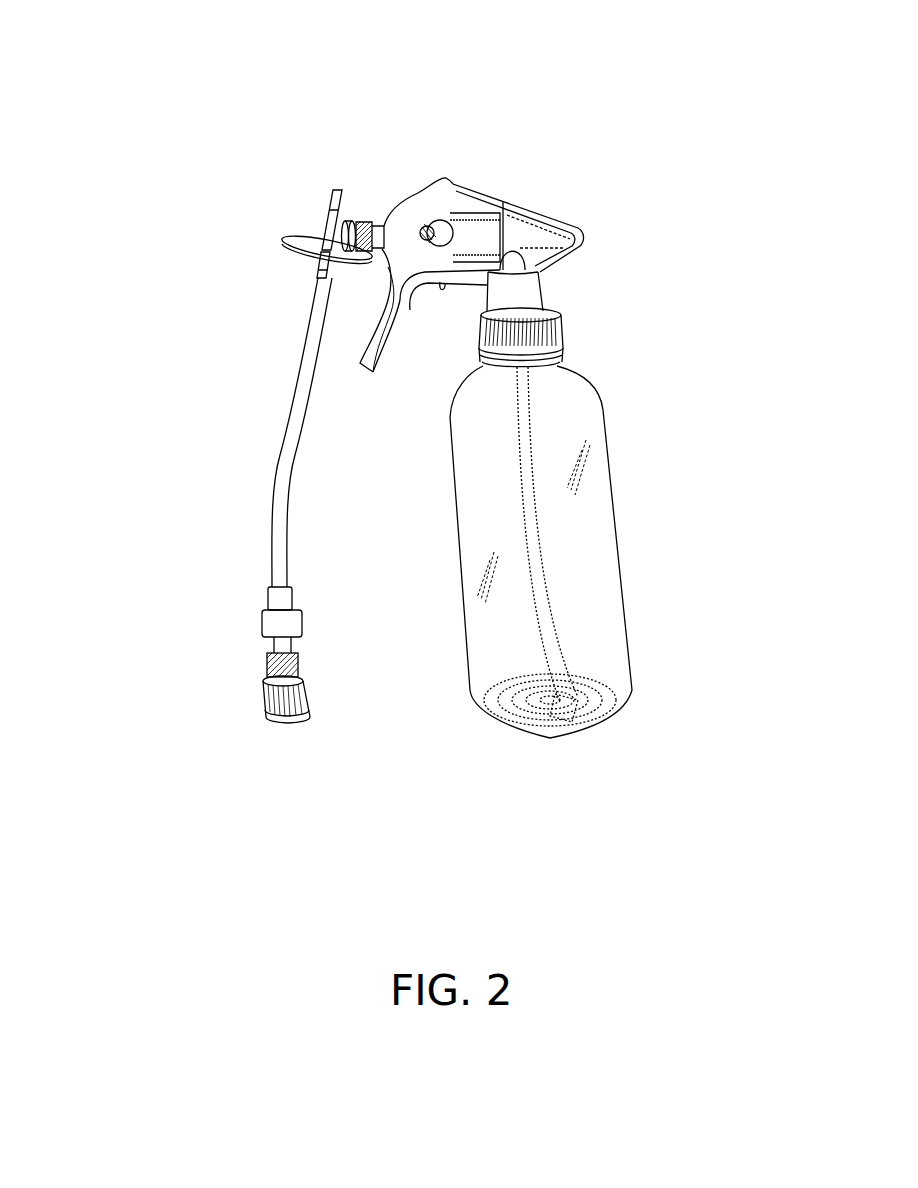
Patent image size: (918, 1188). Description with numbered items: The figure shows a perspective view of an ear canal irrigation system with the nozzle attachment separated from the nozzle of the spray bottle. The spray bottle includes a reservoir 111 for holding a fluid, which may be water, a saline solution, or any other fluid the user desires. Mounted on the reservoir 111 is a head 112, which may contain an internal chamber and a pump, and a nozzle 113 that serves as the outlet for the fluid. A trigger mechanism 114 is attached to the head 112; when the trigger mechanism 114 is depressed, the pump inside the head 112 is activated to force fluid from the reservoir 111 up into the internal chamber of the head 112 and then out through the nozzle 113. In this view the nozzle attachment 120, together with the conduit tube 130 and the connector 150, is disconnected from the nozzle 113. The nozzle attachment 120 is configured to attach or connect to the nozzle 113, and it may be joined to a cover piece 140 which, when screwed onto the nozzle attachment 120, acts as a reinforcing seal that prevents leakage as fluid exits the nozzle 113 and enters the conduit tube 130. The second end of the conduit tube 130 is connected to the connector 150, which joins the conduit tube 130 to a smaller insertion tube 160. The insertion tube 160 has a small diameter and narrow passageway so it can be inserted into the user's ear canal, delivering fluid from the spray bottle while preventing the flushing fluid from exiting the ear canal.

The reservoir 111 is at (630, 580).
The head 112 is at (518, 182).
The nozzle 113 is at (382, 207).
The trigger mechanism 114 is at (387, 370).
The nozzle attachment 120 is at (307, 728).
The conduit tube 130 is at (300, 490).
The cover piece 140 is at (250, 613).
The connector 150 is at (268, 232).
The insertion tube 160 is at (312, 190).